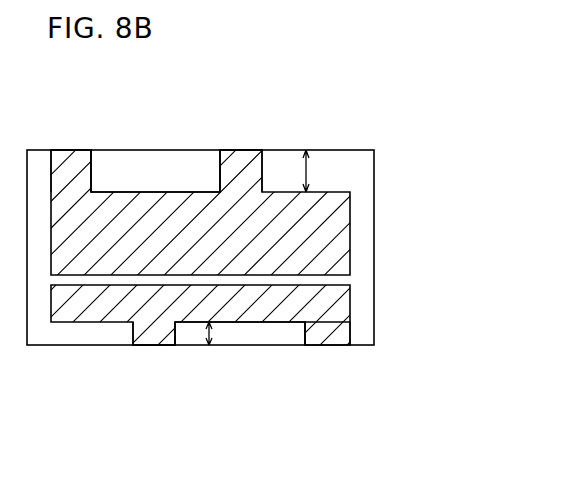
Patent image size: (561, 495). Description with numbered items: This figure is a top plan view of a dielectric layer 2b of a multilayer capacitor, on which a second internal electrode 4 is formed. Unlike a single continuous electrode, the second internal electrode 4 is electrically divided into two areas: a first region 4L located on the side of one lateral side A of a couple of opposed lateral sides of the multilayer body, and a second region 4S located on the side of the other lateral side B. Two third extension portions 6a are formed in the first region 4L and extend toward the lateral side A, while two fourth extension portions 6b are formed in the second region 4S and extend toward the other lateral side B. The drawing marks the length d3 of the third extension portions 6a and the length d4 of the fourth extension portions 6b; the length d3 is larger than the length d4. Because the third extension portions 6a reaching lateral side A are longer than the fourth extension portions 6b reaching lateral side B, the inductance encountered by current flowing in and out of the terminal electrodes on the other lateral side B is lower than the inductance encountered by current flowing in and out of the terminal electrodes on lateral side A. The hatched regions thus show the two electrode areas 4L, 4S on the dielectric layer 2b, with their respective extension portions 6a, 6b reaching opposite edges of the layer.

The dielectric layer 2b is at (375, 245).
The second internal electrode 4 is at (280, 272).
The first region 4L is at (78, 267).
The second region 4S is at (113, 315).
The third extension portions 6a is at (74, 170).
The fourth extension portions 6b is at (157, 338).
The lateral side A is at (144, 150).
The other lateral side B is at (265, 347).
The length of the third extension portions d3 is at (308, 170).
The length of the fourth extension portions d4 is at (215, 333).